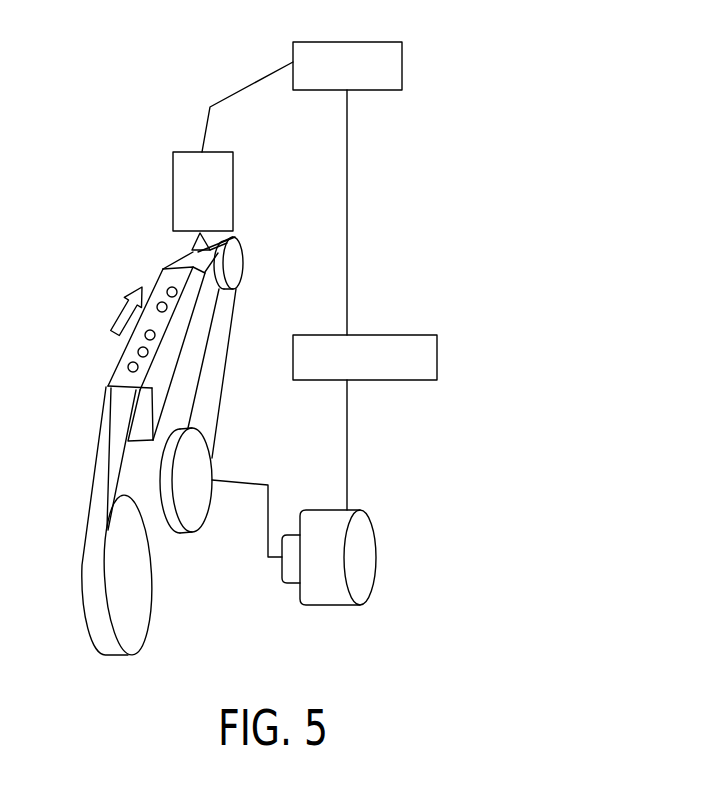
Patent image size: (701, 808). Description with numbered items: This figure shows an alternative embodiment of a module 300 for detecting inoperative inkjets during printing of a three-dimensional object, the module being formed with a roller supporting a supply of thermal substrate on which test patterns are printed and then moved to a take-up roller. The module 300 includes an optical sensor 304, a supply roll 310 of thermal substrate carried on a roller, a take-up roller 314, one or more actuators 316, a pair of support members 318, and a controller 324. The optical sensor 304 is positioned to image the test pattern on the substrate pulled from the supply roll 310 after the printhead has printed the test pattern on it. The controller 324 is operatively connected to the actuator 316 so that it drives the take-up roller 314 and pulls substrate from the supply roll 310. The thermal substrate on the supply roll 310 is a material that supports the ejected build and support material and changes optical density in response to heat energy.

The module 300 is at (512, 80).
The optical sensor 304 is at (246, 186).
The supply roll 310 is at (108, 490).
The take-up roller 314 is at (203, 527).
The actuator 316 is at (402, 63).
The support member 318 is at (183, 352).
The controller 324 is at (408, 333).